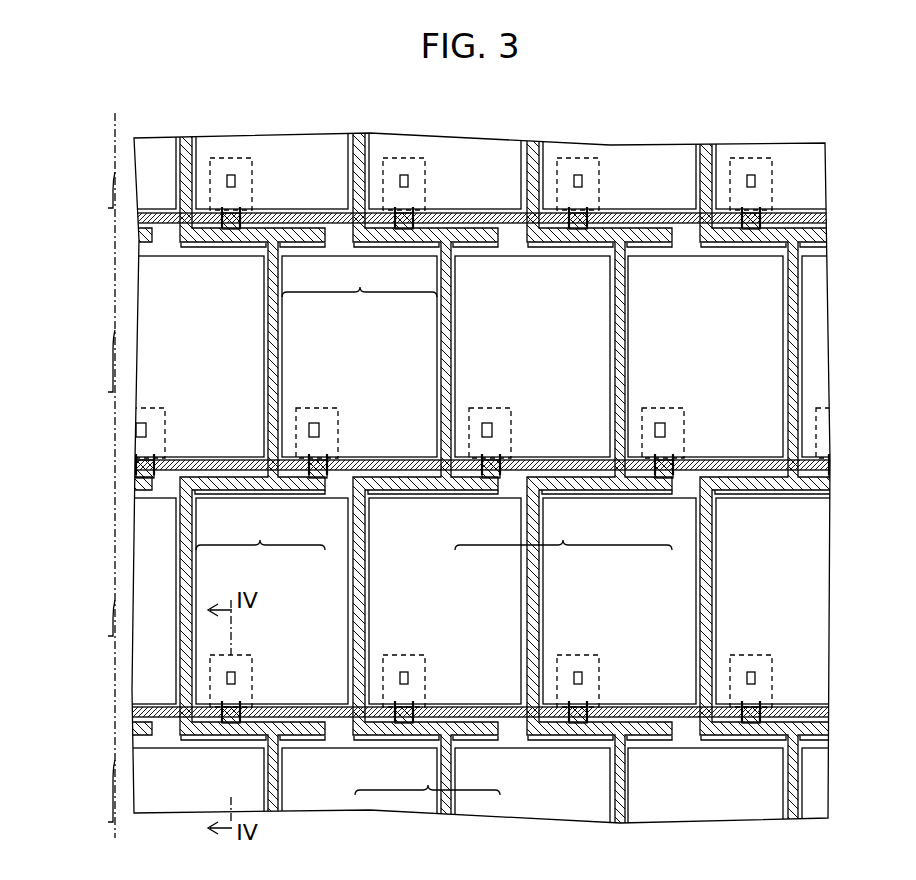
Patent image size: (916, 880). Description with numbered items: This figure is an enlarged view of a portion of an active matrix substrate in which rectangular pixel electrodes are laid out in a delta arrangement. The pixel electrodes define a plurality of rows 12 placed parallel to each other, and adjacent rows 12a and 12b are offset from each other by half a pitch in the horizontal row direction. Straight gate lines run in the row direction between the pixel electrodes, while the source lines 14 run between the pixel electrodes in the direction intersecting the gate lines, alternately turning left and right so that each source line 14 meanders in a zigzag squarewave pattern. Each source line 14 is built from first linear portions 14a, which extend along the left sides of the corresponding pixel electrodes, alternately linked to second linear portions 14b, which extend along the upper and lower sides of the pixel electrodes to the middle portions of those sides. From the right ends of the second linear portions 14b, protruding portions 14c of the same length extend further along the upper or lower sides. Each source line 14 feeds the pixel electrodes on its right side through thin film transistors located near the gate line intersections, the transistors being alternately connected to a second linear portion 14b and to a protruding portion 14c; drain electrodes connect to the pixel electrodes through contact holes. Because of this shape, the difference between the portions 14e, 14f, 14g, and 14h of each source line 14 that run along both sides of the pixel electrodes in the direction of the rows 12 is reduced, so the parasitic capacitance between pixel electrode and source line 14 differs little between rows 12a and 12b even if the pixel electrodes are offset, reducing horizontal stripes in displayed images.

The row 12 is at (85, 497).
The row 12a is at (90, 393).
The row 12b is at (90, 576).
The source line 14 is at (184, 136).
The first linear portion 14a is at (848, 361).
The second linear portion 14b is at (396, 248).
The protruding portion 14c is at (295, 496).
The portion of source line 14e is at (260, 557).
The portion of source line 14f is at (428, 794).
The portion of source line 14g is at (359, 305).
The portion of source line 14h is at (563, 557).